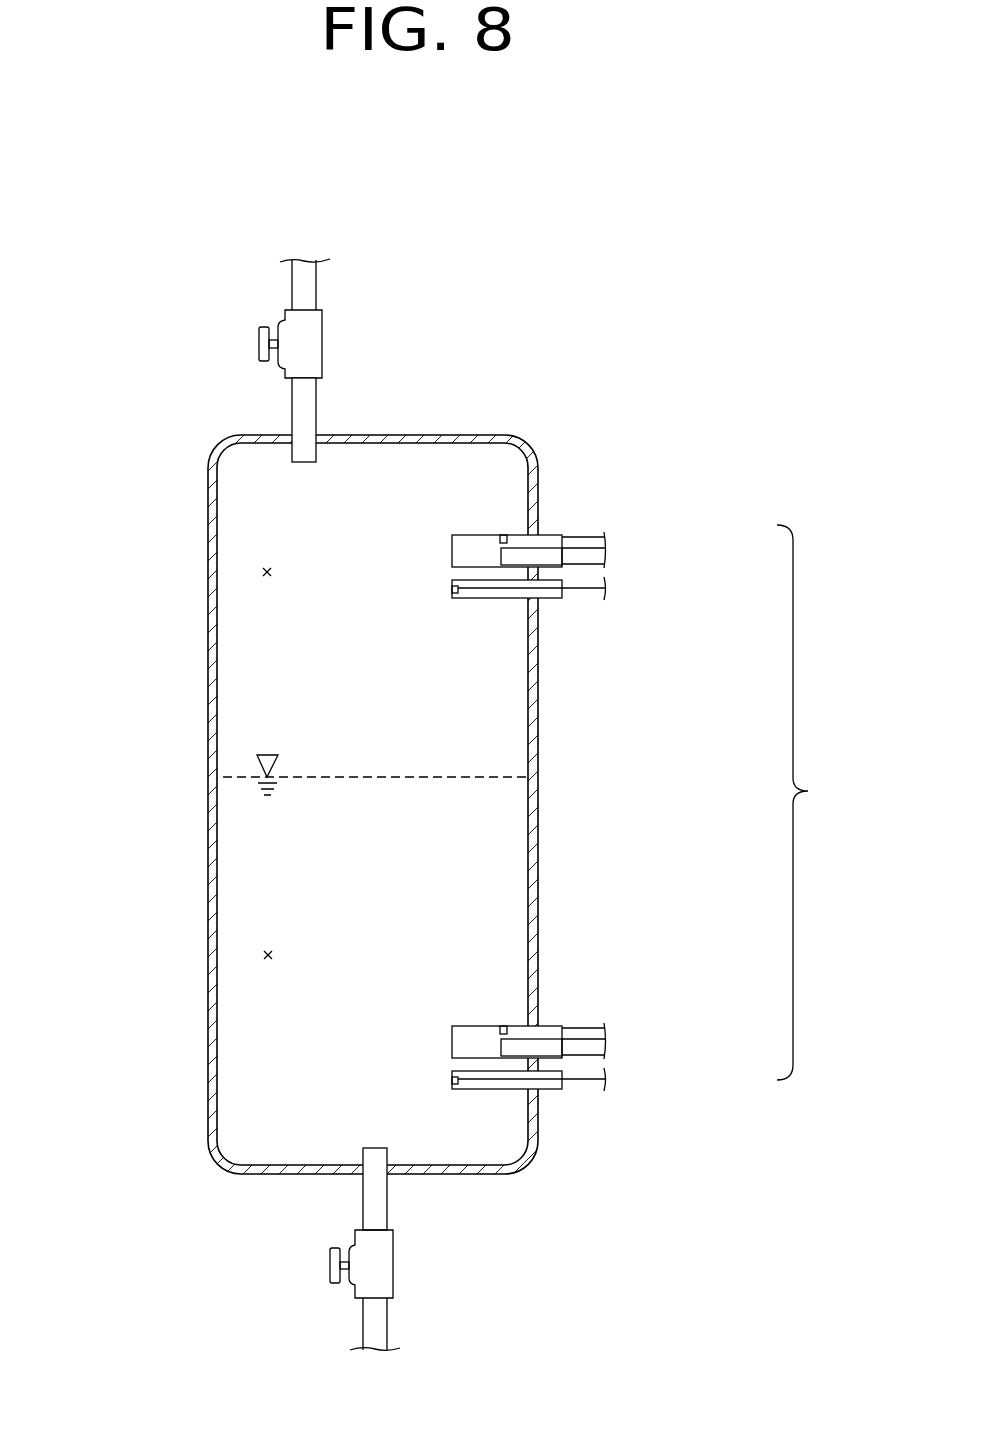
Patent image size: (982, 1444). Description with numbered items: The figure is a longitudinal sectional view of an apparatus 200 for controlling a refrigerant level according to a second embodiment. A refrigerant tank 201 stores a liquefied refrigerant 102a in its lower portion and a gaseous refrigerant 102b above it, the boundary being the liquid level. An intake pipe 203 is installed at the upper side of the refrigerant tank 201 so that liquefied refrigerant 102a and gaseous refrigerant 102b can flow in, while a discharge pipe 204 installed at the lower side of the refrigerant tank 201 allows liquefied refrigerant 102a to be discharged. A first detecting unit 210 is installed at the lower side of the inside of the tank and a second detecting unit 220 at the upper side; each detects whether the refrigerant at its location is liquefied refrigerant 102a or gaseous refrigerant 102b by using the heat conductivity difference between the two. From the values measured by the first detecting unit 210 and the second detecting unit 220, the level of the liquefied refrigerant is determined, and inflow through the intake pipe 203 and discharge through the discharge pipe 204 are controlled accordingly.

The apparatus for controlling a refrigerant level 200 is at (816, 802).
The refrigerant tank 201 is at (212, 712).
The intake pipe 203 is at (298, 407).
The discharge pipe 204 is at (372, 1207).
The first detecting unit 210 is at (630, 1068).
The second detecting unit 220 is at (630, 555).
The liquefied refrigerant 102a is at (265, 955).
The gaseous refrigerant 102b is at (264, 572).